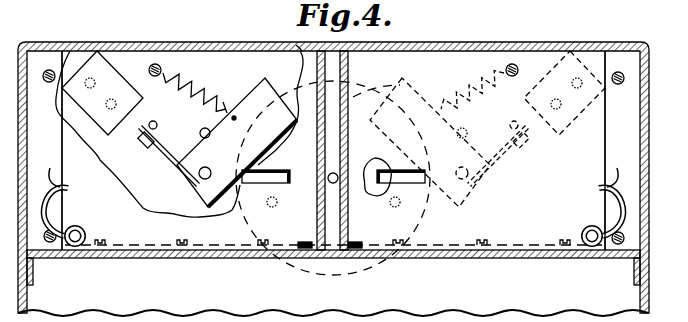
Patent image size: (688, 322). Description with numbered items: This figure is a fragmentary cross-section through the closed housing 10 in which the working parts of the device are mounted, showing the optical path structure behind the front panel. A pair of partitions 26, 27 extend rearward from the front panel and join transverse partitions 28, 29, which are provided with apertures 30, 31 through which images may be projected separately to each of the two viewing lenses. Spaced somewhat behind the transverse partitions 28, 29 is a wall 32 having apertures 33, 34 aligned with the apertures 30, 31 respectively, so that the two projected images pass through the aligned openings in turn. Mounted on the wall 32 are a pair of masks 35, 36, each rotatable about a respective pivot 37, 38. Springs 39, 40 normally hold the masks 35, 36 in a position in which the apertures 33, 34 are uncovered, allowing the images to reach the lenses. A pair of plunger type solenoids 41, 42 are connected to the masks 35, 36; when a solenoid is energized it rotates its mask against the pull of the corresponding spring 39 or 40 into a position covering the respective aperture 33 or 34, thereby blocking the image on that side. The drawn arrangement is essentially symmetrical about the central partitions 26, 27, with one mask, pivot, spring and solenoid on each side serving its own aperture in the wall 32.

The housing 10 is at (417, 43).
The partition 26 is at (353, 97).
The partition 27 is at (320, 151).
The transverse partition 28 is at (303, 42).
The transverse partition 29 is at (468, 68).
The aperture 30 is at (290, 184).
The aperture 31 is at (424, 192).
The wall 32 is at (212, 67).
The aperture 33 is at (226, 211).
The aperture 34 is at (385, 160).
The mask 35 is at (234, 117).
The mask 36 is at (447, 96).
The pivot 37 is at (199, 170).
The pivot 38 is at (492, 154).
The spring 39 is at (197, 96).
The spring 40 is at (443, 109).
The plunger type solenoid 41 is at (106, 75).
The plunger type solenoid 42 is at (558, 48).